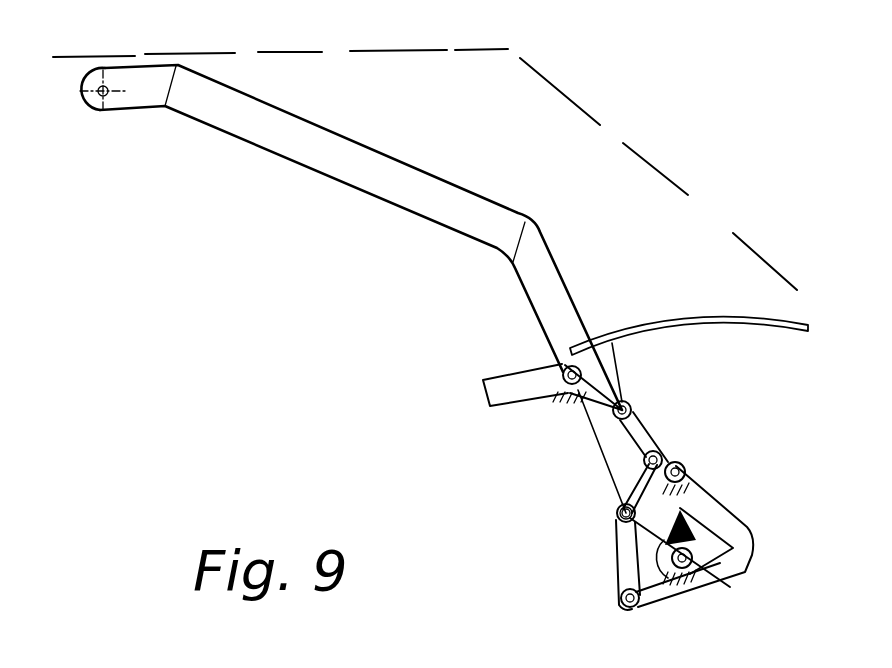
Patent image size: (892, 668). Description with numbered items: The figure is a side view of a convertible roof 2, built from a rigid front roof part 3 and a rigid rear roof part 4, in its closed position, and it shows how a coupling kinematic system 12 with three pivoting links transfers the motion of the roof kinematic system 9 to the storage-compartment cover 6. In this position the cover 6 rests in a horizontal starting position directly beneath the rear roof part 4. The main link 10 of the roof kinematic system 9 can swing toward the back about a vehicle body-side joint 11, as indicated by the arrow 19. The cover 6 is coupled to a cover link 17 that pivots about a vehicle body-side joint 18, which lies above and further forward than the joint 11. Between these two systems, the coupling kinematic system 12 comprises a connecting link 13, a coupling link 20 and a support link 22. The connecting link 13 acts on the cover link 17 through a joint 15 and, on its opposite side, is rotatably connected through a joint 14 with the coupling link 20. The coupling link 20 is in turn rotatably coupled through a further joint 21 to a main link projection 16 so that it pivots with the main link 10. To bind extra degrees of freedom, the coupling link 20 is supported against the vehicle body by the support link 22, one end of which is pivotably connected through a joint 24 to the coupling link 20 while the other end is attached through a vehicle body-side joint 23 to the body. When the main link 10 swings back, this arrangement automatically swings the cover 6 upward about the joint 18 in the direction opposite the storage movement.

The roof 2 is at (156, 38).
The front roof part 3 is at (218, 54).
The rear roof part 4 is at (643, 157).
The cover 6 is at (700, 318).
The roof kinematic system 9 is at (318, 188).
The main link 10 is at (408, 168).
The vehicle body-side joint 11 is at (728, 586).
The coupling kinematic system 12 is at (676, 416).
The connecting link 13 is at (628, 440).
The joint 14 is at (661, 455).
The joint 15 is at (628, 402).
The main link projection 16 is at (663, 592).
The cover link 17 is at (598, 397).
The vehicle body-side joint 18 is at (558, 368).
The arrow 19 is at (660, 540).
The coupling link 20 is at (618, 555).
The joint 21 is at (623, 602).
The support link 22 is at (624, 499).
The vehicle body-side joint 23 is at (688, 470).
The joint 24 is at (620, 518).